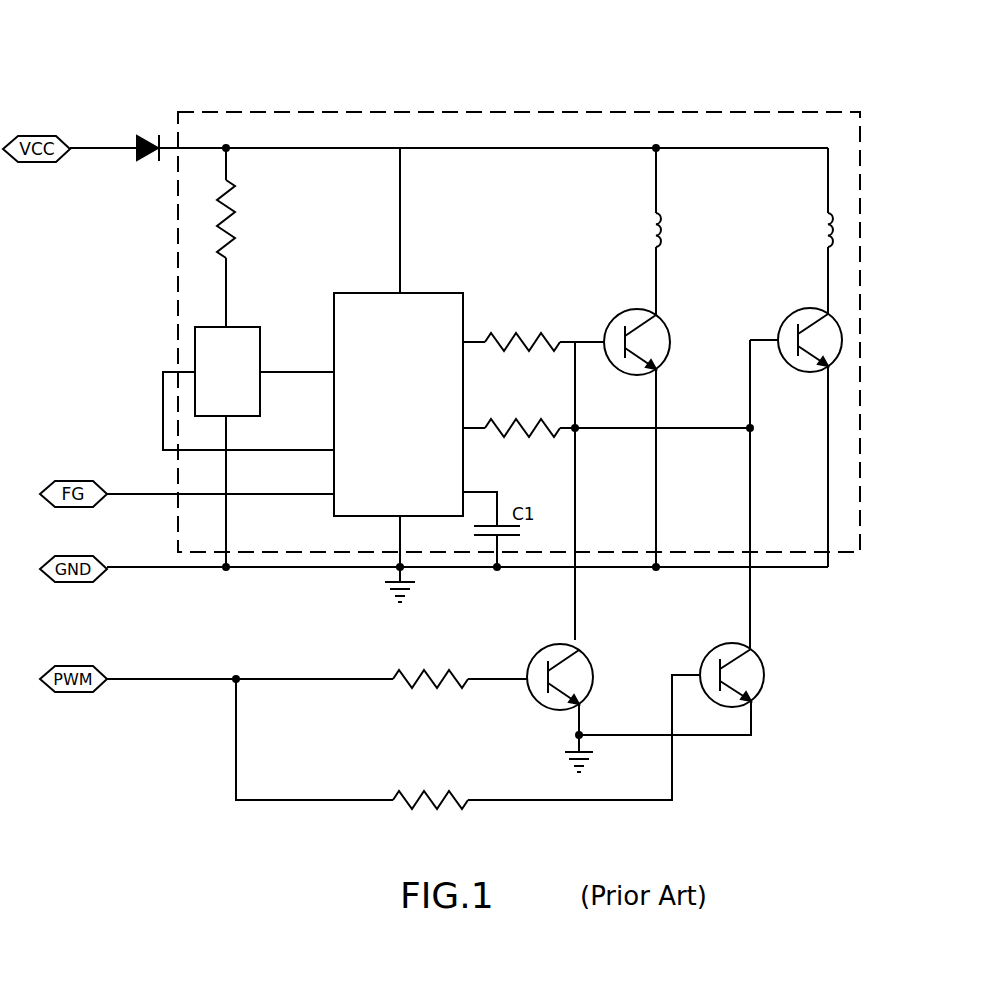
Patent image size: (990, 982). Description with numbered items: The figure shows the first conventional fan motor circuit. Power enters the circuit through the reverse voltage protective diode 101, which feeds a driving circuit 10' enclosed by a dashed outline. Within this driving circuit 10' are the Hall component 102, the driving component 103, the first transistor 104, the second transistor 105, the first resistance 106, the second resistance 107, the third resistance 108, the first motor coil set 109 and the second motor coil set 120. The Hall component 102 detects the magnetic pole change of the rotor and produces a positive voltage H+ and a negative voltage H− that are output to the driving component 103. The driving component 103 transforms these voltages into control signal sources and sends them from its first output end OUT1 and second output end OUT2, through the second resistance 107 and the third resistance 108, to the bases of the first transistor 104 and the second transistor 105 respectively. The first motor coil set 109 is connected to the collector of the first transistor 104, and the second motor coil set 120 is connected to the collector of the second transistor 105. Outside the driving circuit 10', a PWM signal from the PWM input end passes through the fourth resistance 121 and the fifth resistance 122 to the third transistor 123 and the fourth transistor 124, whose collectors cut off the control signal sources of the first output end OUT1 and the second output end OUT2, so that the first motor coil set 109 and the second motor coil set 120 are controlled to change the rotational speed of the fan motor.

The driving circuit 10' is at (542, 301).
The reverse voltage protective diode 101 is at (150, 140).
The Hall component 102 is at (200, 350).
The driving component 103 is at (362, 305).
The first transistor 104 is at (655, 352).
The second transistor 105 is at (832, 350).
The first resistance 106 is at (226, 208).
The second resistance 107 is at (540, 340).
The third resistance 108 is at (540, 430).
The first motor coil set 109 is at (660, 230).
The second motor coil set 120 is at (833, 232).
The fourth resistance 121 is at (442, 677).
The fifth resistance 122 is at (430, 799).
The third transistor 123 is at (573, 670).
The fourth transistor 124 is at (752, 682).